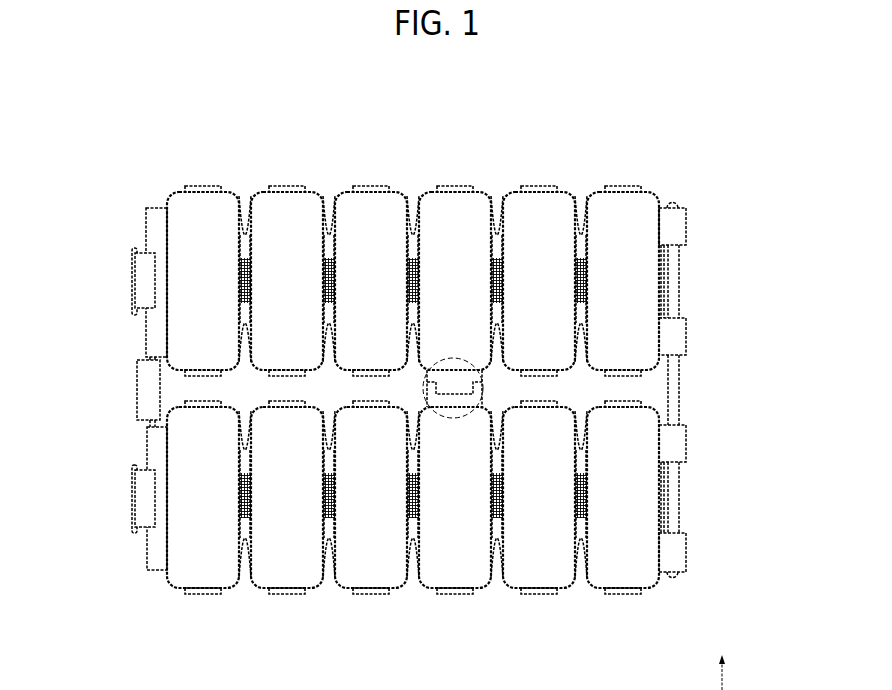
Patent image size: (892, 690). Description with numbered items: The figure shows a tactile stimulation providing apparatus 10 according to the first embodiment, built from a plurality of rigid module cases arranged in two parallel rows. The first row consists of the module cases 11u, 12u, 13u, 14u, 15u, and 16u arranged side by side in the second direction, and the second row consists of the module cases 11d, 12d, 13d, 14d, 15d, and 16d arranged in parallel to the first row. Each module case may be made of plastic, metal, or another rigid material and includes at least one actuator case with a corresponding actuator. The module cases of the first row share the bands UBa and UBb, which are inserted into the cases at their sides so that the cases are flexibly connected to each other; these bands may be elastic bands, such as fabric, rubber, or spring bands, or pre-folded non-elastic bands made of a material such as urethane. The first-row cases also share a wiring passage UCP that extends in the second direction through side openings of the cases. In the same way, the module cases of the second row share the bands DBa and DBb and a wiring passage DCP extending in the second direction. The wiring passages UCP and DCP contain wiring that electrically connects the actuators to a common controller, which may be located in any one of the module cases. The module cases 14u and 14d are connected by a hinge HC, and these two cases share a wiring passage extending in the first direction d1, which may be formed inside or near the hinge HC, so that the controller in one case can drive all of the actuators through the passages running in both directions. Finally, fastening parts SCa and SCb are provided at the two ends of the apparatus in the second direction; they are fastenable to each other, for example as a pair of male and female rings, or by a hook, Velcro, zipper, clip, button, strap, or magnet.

The tactile stimulation providing apparatus 10 is at (696, 115).
The module case 11u is at (201, 186).
The module case 12u is at (285, 186).
The module case 13u is at (369, 186).
The module case 14u is at (453, 186).
The module case 15u is at (537, 186).
The module case 16u is at (621, 186).
The module case 11d is at (203, 594).
The module case 12d is at (287, 594).
The module case 13d is at (371, 594).
The module case 14d is at (455, 594).
The module case 15d is at (539, 594).
The module case 16d is at (623, 594).
The band UBa is at (588, 215).
The wiring passage UCP is at (590, 278).
The band UBb is at (590, 346).
The band DBb is at (588, 433).
The fastening part SCb is at (676, 478).
The wiring passage DCP is at (588, 505).
The band DBa is at (588, 563).
The fastening part SCa is at (135, 492).
The hinge HC is at (486, 392).
The first direction d1 is at (722, 660).